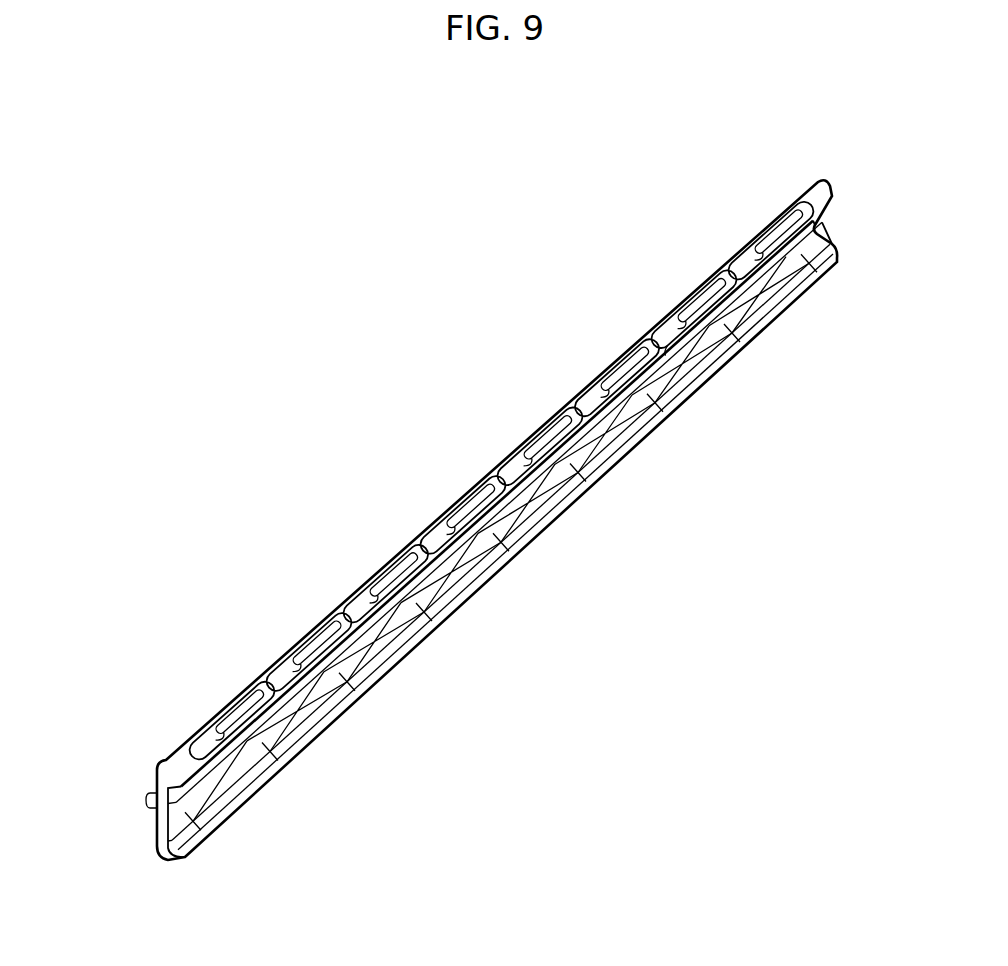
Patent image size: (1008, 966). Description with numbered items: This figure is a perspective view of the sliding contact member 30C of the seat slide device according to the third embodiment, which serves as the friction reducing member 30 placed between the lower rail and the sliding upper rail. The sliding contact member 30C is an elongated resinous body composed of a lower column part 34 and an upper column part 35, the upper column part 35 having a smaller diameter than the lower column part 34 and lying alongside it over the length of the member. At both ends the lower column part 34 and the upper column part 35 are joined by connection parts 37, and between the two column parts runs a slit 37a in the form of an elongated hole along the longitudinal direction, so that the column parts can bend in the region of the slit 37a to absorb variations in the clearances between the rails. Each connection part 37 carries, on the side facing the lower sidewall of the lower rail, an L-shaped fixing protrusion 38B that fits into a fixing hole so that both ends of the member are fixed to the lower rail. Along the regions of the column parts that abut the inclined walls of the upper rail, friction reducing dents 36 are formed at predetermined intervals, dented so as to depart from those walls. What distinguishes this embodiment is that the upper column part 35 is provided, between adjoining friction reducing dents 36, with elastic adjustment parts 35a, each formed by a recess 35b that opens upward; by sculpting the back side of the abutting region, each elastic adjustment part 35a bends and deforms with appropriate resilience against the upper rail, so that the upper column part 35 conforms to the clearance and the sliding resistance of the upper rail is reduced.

The friction reducing member 30 is at (497, 483).
The sliding contact member 30C is at (800, 193).
The lower column part 34 is at (470, 592).
The upper column part 35 is at (173, 758).
The elastic adjustment part 35a is at (708, 312).
The recess 35b is at (604, 389).
The friction reducing dent 36 is at (594, 460).
The connection part 37 is at (814, 222).
The slit 37a is at (670, 343).
The fixing protrusion 38B is at (145, 802).